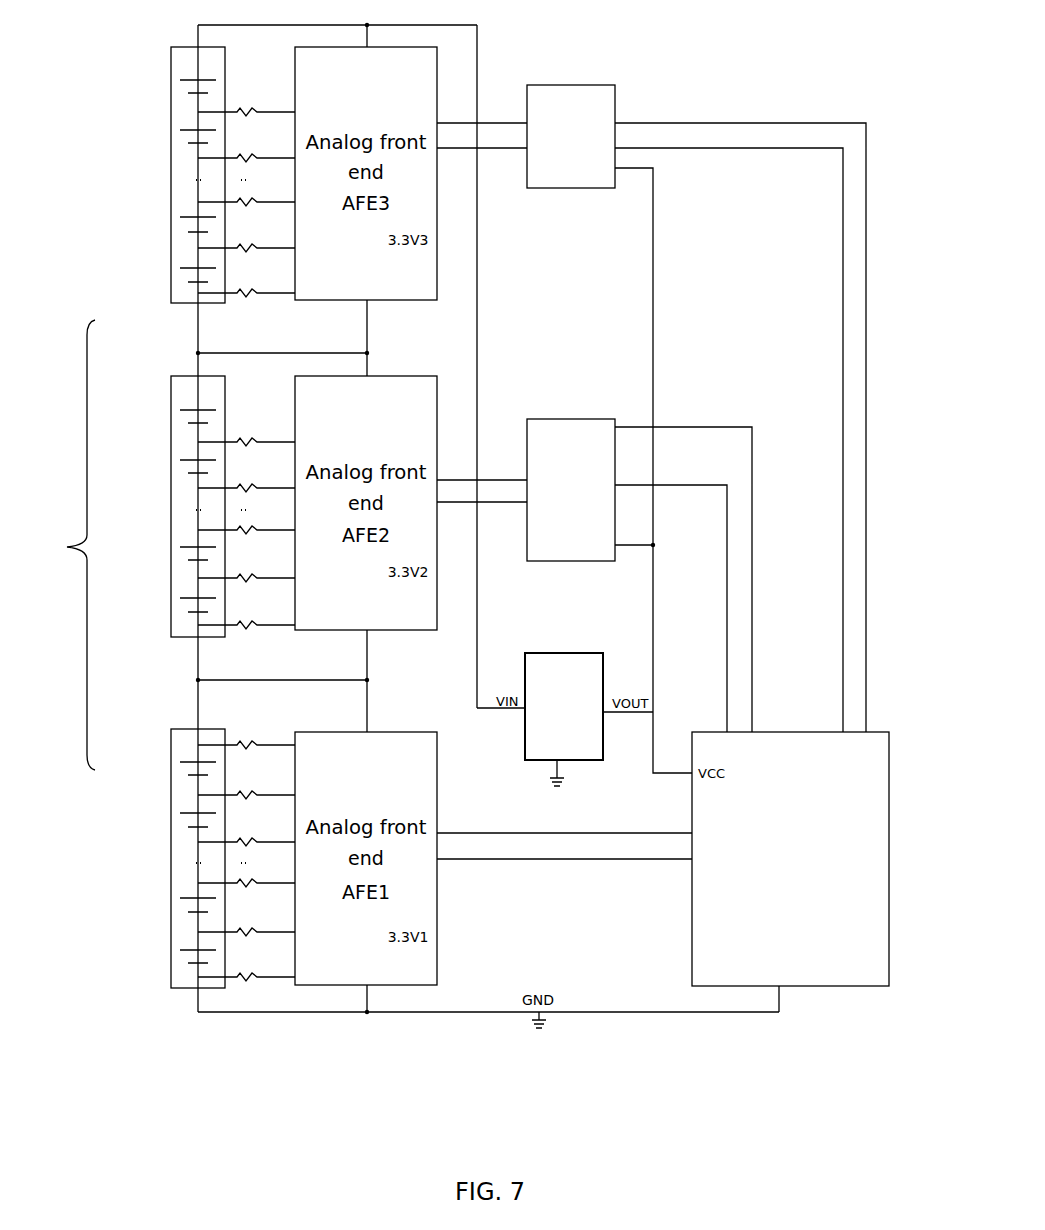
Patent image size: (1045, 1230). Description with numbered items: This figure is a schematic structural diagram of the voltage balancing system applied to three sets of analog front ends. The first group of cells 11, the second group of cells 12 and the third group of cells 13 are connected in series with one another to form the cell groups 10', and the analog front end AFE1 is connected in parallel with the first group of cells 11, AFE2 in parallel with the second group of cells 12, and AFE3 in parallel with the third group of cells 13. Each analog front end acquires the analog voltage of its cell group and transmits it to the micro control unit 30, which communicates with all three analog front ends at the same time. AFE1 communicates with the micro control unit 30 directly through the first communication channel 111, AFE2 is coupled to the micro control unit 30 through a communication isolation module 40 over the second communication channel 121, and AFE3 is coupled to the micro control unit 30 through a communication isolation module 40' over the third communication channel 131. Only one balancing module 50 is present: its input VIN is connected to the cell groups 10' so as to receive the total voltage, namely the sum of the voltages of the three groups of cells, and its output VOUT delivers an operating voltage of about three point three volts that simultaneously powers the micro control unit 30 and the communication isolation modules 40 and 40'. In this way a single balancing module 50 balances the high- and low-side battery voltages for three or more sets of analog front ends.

The cell groups 10' is at (61, 545).
The first group of cells 11 is at (183, 740).
The second group of cells 12 is at (183, 523).
The third group of cells 13 is at (183, 292).
The micro control unit 30 is at (737, 953).
The communication isolation module 40 is at (619, 466).
The communication isolation module 40' is at (578, 111).
The balancing module 50 is at (588, 760).
The first communication channel 111 is at (470, 862).
The second communication channel 121 is at (750, 679).
The third communication channel 131 is at (854, 438).